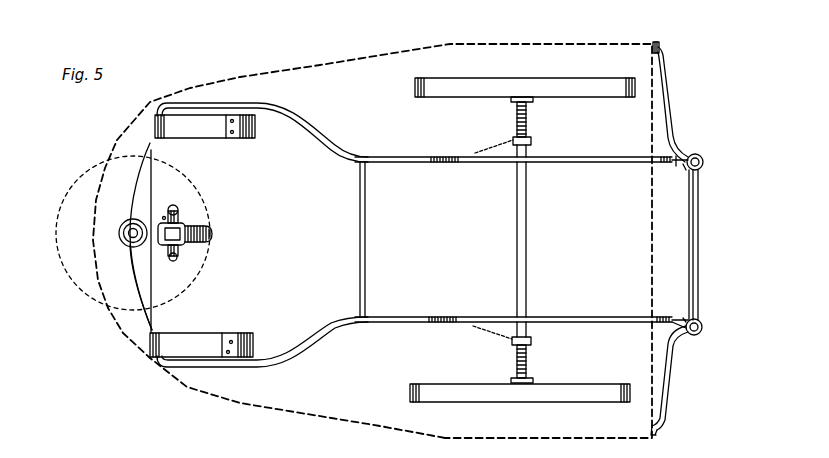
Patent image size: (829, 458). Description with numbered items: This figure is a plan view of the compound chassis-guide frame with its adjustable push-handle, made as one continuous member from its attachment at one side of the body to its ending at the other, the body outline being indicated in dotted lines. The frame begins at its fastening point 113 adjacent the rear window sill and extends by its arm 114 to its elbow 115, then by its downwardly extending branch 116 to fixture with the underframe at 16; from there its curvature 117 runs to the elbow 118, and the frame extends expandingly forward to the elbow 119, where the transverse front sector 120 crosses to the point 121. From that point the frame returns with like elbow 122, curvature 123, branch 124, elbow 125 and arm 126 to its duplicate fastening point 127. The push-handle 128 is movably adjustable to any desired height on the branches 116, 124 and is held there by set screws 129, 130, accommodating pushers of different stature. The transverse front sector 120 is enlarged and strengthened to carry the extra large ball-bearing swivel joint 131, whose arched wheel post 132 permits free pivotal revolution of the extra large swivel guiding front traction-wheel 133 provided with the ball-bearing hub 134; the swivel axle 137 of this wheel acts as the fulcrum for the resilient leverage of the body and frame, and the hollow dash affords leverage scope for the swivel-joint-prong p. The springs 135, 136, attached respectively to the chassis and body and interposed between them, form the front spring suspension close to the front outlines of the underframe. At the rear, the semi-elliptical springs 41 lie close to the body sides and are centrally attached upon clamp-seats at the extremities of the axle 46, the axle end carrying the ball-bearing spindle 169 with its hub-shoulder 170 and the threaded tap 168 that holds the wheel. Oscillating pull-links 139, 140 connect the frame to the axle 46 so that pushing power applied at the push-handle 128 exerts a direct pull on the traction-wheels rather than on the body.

The underframe fixture point 16 is at (660, 167).
The semi-elliptical springs 41 is at (480, 86).
The axle 46 is at (518, 253).
The fastening point 113 is at (661, 49).
The arm 114 is at (670, 93).
The elbow 115 is at (699, 158).
The downwardly extending branch 116 is at (668, 156).
The curvature 117 is at (590, 157).
The elbow 118 is at (447, 156).
The elbow 119 is at (165, 108).
The transverse front sector 120 is at (147, 183).
The point 121 is at (163, 370).
The elbow 122 is at (440, 316).
The curvature 123 is at (583, 323).
The branch 124 is at (672, 328).
The elbow 125 is at (702, 329).
The arm 126 is at (670, 379).
The duplicate fastening point 127 is at (658, 434).
The push-handle 128 is at (695, 244).
The set screw 129 is at (683, 168).
The set screw 130 is at (683, 316).
The ball-bearing swivel joint 131 is at (121, 242).
The arched wheel post 132 is at (145, 283).
The swivel guiding front traction-wheel 133 is at (208, 235).
The ball-bearing hub 134 is at (183, 227).
The spring 135 is at (247, 141).
The spring 136 is at (198, 347).
The swivel axle 137 is at (174, 211).
The oscillating pull-link 139 is at (492, 148).
The oscillating pull-link 140 is at (493, 335).
The threaded tap 168 is at (530, 102).
The ball-bearing spindle 169 is at (527, 127).
The hub-shoulder 170 is at (530, 139).
The swivel-joint-prong p is at (167, 214).